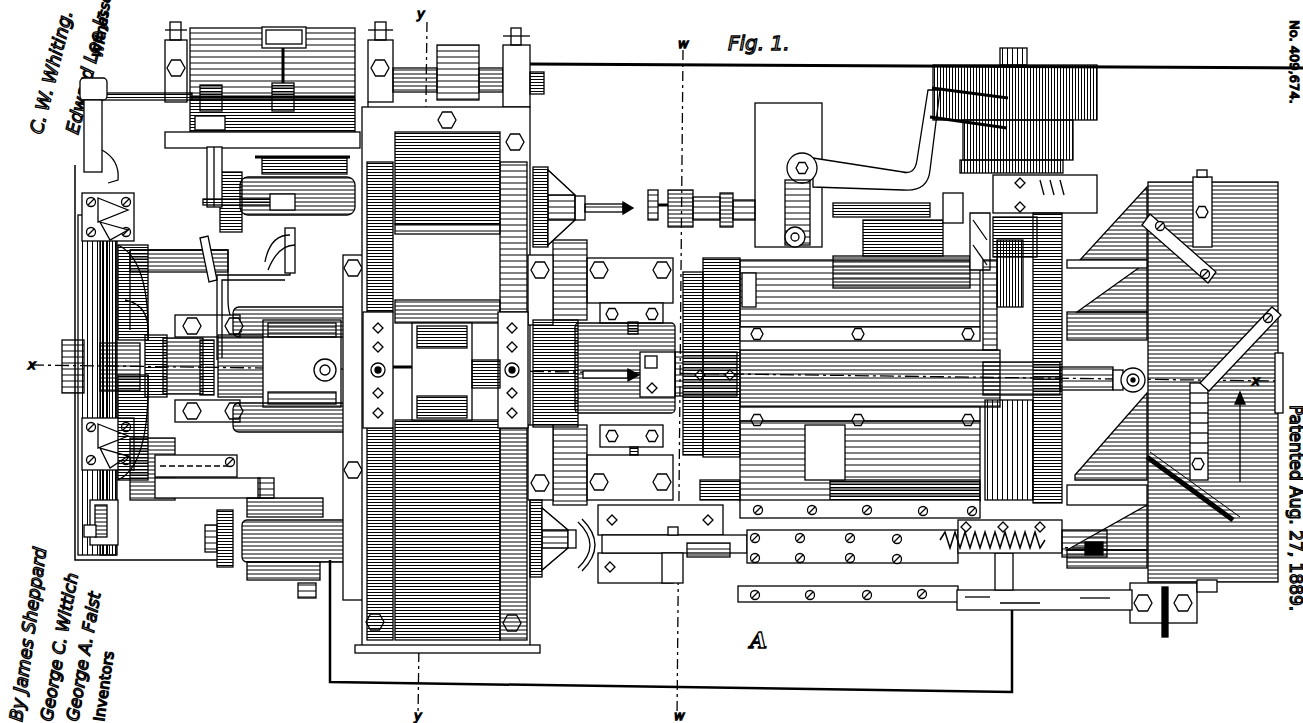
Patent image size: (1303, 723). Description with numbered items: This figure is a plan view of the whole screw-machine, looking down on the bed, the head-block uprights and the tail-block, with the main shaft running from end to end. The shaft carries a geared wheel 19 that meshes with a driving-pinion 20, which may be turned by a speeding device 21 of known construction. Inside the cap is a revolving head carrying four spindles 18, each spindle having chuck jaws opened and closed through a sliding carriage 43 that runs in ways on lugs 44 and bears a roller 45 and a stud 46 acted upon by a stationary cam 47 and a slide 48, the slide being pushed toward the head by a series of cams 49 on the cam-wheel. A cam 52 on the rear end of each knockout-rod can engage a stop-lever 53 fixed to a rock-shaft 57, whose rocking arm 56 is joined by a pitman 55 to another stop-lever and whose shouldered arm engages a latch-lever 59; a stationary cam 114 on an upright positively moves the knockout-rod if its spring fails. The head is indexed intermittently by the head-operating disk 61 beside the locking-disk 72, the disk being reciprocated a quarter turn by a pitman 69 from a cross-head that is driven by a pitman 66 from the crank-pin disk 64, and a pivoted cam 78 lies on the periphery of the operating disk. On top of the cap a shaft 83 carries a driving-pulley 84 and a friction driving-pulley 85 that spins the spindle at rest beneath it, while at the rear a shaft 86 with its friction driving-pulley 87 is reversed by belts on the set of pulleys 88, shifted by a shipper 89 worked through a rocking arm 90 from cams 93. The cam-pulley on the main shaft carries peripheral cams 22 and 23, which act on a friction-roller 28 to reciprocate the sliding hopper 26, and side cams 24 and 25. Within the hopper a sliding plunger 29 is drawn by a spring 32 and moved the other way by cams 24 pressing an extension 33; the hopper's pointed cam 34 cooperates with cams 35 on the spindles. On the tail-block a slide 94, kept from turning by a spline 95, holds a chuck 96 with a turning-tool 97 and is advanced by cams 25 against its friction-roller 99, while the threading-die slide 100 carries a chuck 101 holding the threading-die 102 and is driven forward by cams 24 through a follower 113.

The set of pulleys 88 is at (272, 72).
The shipper 89 is at (146, 104).
The rocking arm 90 is at (100, 125).
The friction driving-pulley 87 is at (448, 72).
The shaft 86 is at (544, 84).
The stationary cam 47 is at (362, 136).
The cams 93 is at (83, 206).
The series of cams 49 is at (120, 250).
The slide 48 is at (207, 476).
The stud 46 is at (266, 480).
The cam 52 is at (200, 356).
The spindles 18 is at (582, 184).
The sliding carriage 43 is at (300, 498).
The roller 45 is at (325, 360).
The lugs 44 is at (292, 308).
The pitman 55 is at (207, 164).
The rocking arm 56 is at (240, 208).
The stationary cam 114 is at (212, 257).
The stop-lever 53 is at (222, 305).
The latch-lever 59 is at (284, 250).
The rock-shaft 57 is at (297, 258).
The shaft 83 is at (390, 318).
The friction driving-pulley 85 is at (446, 371).
The cams 35 is at (555, 172).
The pointed cam 34 is at (590, 528).
The cam 78 is at (585, 572).
The driving-pulley 84 is at (555, 373).
The turning-tool 97 is at (645, 357).
The chuck 96 is at (706, 374).
The locking-disk 72 is at (692, 273).
The head-operating disk 61 is at (713, 258).
The pitman 69 is at (750, 307).
The pitman 66 is at (805, 452).
The threading-die slide 100 is at (872, 180).
The threading-die 102 is at (651, 197).
The chuck 101 is at (700, 196).
The speeding device 21 is at (972, 143).
The follower 113 is at (1045, 194).
The driving-pinion 20 is at (1040, 235).
The geared wheel 19 is at (1058, 288).
The series of cams 24 is at (1100, 215).
The series of cams 25 is at (1108, 290).
The slide 94 is at (1048, 378).
The spline 95 is at (1016, 405).
The friction-roller 99 is at (1144, 378).
The cams 22 is at (1210, 180).
The cams 23 is at (1217, 279).
The friction-roller 28 is at (1215, 587).
The sliding hopper 26 is at (865, 557).
The sliding plunger 29 is at (715, 556).
The crank-pin disk 64 is at (860, 509).
The spring 32 is at (1001, 536).
The extension 33 is at (1086, 556).